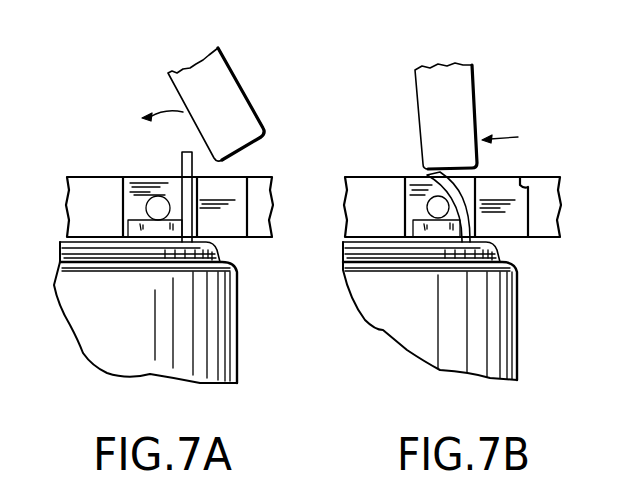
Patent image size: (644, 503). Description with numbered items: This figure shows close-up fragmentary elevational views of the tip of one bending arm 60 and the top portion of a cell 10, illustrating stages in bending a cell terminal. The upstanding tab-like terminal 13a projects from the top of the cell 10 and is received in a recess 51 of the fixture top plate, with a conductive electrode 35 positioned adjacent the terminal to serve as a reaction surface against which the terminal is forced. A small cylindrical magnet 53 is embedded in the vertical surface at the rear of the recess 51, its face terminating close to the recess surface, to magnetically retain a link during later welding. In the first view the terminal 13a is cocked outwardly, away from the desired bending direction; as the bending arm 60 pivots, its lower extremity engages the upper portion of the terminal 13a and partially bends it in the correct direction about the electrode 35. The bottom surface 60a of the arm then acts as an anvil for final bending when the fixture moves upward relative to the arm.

In FIG. 7A, the cell 10 is at (98, 353).
In FIG. 7B, the cell 10 is at (415, 345).
In FIG. 7A, the bent positive terminal 13a is at (185, 163).
In FIG. 7B, the bent positive terminal 13a is at (430, 177).
In FIG. 7A, the conductive electrode 35 is at (153, 243).
In FIG. 7B, the conductive electrode 35 is at (437, 242).
In FIG. 7A, the recess 51 is at (137, 187).
In FIG. 7B, the recess 51 is at (523, 180).
In FIG. 7A, the cylindrical magnet 53 is at (147, 205).
In FIG. 7B, the cylindrical magnet 53 is at (438, 207).
In FIG. 7A, the bending arm 60 is at (240, 120).
In FIG. 7B, the bending arm 60 is at (470, 115).
In FIG. 7A, the bottom surface of bending arm 60a is at (258, 145).
In FIG. 7B, the bottom surface of bending arm 60a is at (500, 139).